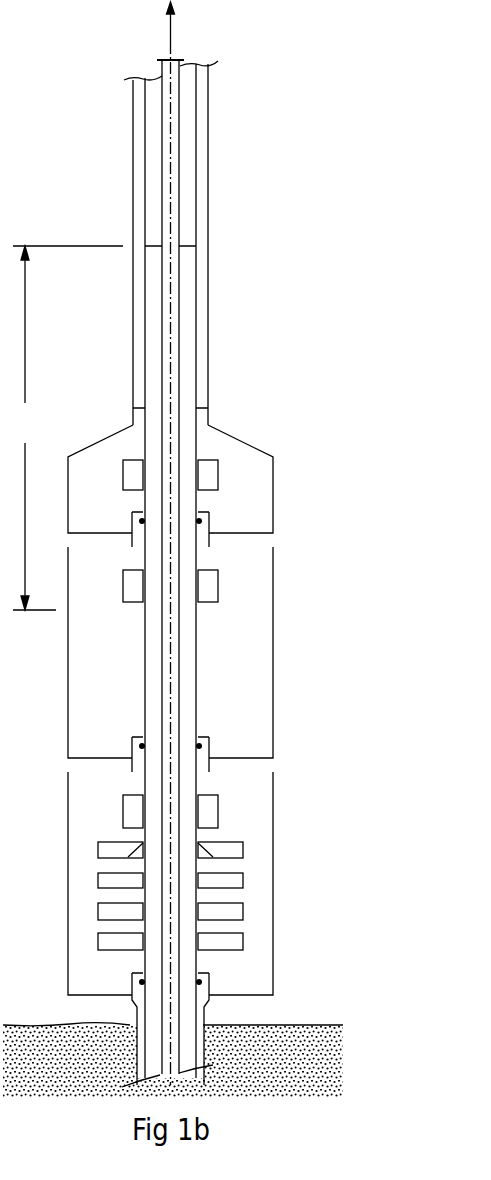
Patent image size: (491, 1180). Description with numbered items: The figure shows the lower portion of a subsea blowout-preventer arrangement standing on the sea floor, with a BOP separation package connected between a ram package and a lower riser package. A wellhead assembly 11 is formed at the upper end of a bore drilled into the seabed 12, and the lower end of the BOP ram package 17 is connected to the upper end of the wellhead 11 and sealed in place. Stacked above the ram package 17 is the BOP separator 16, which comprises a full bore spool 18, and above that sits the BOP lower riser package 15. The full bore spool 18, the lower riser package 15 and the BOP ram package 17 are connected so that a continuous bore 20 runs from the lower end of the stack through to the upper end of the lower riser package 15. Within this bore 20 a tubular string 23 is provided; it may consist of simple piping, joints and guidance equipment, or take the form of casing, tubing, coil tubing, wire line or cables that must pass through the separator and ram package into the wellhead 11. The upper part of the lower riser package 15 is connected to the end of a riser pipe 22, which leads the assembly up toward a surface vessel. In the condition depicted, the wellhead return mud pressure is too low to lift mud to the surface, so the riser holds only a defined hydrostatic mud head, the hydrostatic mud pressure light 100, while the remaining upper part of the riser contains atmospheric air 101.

The hydrostatic mud pressure light 100 is at (64, 428).
The atmospheric air 101 is at (189, 150).
The riser pipe 22 is at (208, 302).
The tubular string 23 is at (172, 392).
The BOP lower riser package 15 is at (247, 482).
The BOP separator 16 is at (247, 715).
The BOP ram package 17 is at (247, 865).
The full bore spool 18 is at (143, 657).
The continuous bore 20 is at (143, 870).
The wellhead assembly 11 is at (205, 1012).
The seabed 12 is at (272, 1026).